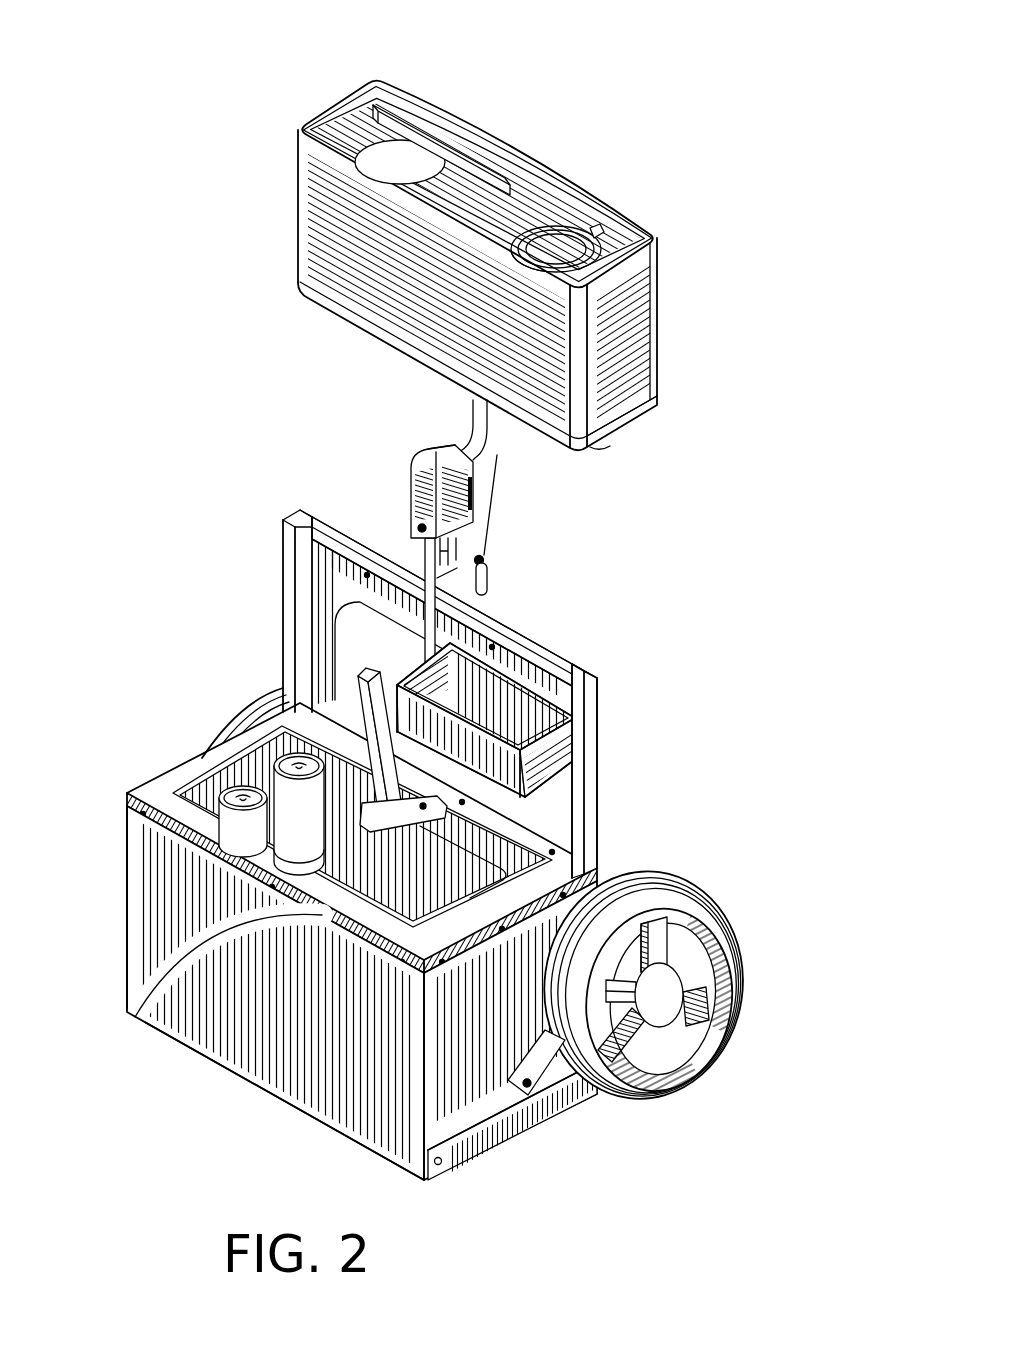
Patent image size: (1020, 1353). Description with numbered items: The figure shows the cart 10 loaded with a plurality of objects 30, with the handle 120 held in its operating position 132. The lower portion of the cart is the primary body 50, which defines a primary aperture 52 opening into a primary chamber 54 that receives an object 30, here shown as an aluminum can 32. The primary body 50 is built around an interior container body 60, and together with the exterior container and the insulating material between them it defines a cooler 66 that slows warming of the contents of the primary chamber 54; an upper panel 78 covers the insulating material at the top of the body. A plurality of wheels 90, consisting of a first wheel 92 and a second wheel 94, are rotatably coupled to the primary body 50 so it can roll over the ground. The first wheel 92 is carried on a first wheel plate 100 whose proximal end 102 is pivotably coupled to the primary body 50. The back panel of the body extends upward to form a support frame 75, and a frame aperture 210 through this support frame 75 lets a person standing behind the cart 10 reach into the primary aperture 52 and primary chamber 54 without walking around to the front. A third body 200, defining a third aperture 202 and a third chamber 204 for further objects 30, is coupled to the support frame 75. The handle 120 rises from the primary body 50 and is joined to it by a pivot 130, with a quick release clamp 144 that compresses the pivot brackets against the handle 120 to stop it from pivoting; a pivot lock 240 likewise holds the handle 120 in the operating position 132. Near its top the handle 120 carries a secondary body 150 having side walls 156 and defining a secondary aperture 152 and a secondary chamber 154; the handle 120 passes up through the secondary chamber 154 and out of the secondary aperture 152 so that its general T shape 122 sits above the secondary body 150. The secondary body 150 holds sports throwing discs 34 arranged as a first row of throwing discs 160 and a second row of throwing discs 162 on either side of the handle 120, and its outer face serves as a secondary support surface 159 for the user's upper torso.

The cart 10 is at (758, 84).
The operating position 132 is at (783, 120).
The object 30 is at (370, 143).
The aluminum can 32 is at (222, 812).
The sports throwing discs 34 is at (555, 233).
The primary body 50 is at (352, 993).
The primary aperture 52 is at (155, 978).
The primary chamber 54 is at (500, 850).
The interior container body 60 is at (510, 862).
The cooler 66 is at (288, 1080).
The support frame 75 is at (318, 625).
The upper panel 78 is at (175, 795).
The wheels 90 is at (544, 921).
The first wheel 92 is at (738, 985).
The second wheel 94 is at (237, 720).
The first wheel plate 100 is at (561, 1106).
The proximal end 102 is at (540, 1095).
The handle 120 is at (498, 458).
The general T shape 122 is at (433, 138).
The pivot 130 is at (486, 558).
The quick release clamp 144 is at (490, 578).
The secondary body 150 is at (487, 237).
The secondary aperture 152 is at (660, 240).
The secondary chamber 154 is at (650, 252).
The side walls 156 is at (640, 390).
The secondary support surface 159 is at (305, 230).
The first row of throwing discs 160 is at (595, 235).
The second row of throwing discs 162 is at (400, 157).
The third body 200 is at (557, 740).
The third aperture 202 is at (535, 692).
The third chamber 204 is at (500, 690).
The frame aperture 210 is at (396, 616).
The pivot lock 240 is at (418, 458).